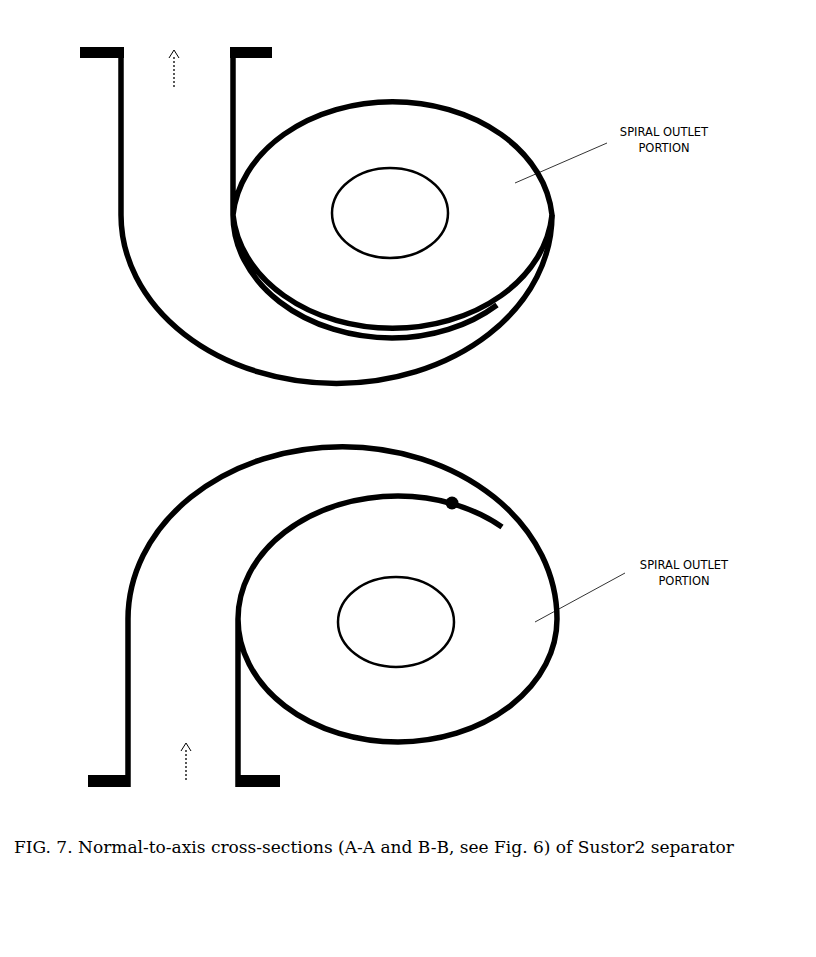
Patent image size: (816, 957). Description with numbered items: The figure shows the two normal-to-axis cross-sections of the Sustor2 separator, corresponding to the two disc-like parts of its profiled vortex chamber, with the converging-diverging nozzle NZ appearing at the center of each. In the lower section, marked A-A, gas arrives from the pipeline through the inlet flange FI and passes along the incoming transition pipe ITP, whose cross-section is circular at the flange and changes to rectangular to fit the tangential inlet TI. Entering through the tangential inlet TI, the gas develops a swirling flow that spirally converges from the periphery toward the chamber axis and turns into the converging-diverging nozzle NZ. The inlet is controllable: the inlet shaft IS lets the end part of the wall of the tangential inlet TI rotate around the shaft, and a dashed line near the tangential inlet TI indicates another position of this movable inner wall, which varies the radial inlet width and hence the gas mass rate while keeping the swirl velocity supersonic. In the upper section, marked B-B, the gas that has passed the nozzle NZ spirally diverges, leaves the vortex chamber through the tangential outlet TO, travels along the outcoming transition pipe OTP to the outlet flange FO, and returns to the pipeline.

The outlet flange FO is at (157, 55).
The outcoming transition pipe OTP is at (336, 215).
The tangential outlet TO is at (392, 192).
The converging-diverging nozzle NZ is at (374, 221).
The cross-section B-B is at (525, 367).
The inlet flange FI is at (167, 783).
The incoming transition pipe ITP is at (342, 617).
The tangential inlet TI is at (458, 508).
The inlet shaft IS is at (438, 513).
The cross-section A-A is at (511, 742).